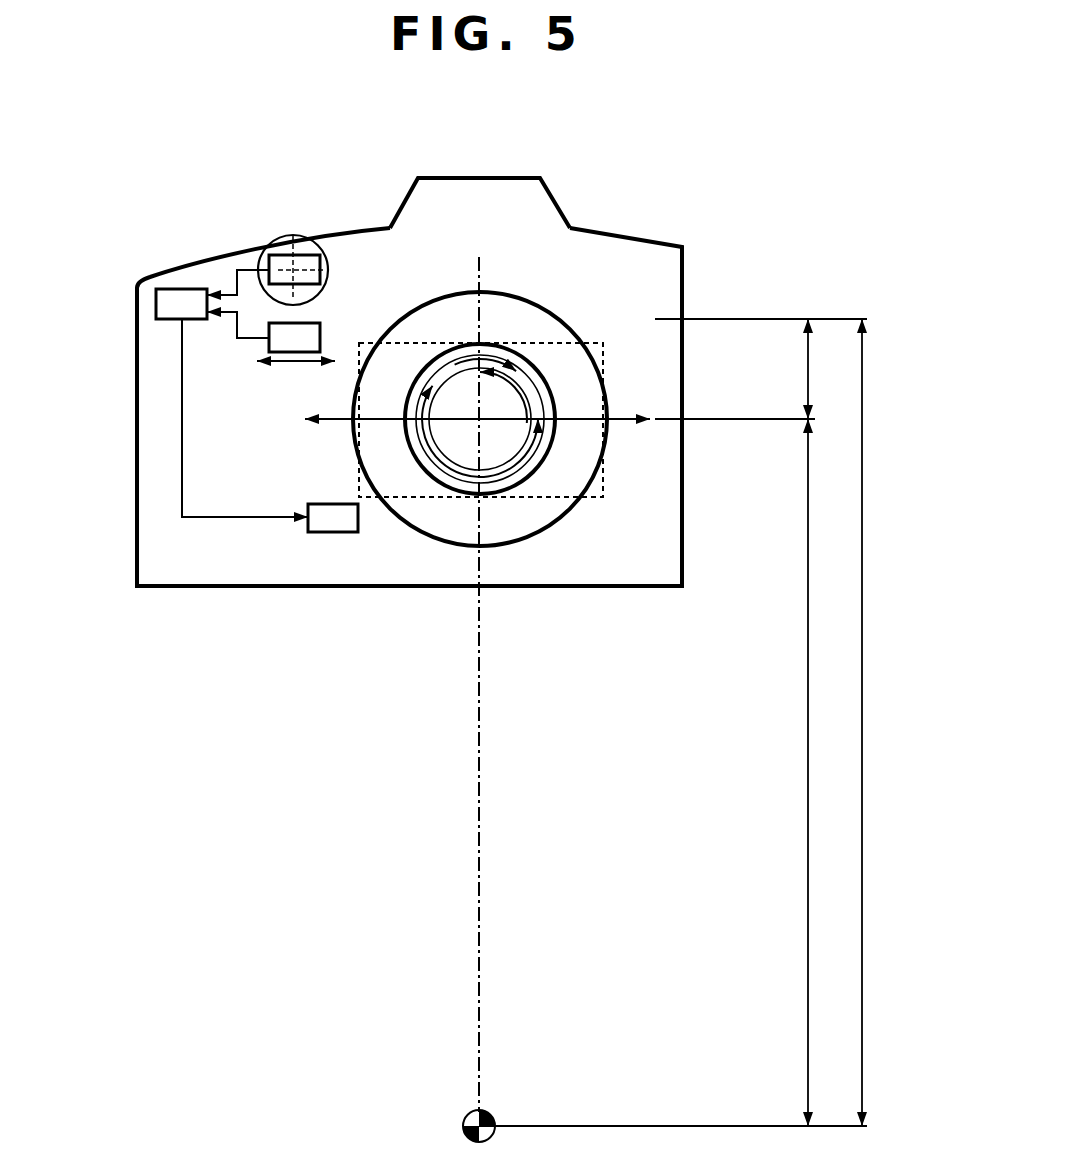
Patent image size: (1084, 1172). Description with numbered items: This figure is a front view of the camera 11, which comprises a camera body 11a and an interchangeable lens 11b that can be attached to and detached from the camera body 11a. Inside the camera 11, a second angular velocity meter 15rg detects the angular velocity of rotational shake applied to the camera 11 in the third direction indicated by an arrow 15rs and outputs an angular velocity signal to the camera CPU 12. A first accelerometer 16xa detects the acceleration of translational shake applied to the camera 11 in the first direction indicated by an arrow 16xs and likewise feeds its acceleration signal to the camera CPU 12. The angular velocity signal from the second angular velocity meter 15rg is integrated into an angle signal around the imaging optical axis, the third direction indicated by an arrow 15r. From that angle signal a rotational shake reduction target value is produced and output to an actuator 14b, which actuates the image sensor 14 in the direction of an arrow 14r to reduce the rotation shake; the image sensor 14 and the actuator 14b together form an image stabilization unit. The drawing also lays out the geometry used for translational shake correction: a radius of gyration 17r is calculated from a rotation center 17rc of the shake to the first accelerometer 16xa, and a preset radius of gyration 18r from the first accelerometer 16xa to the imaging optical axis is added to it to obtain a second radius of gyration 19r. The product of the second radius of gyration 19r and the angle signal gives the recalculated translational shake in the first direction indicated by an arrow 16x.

The camera 11 is at (173, 150).
The camera body 11a is at (512, 178).
The interchangeable lens 11b is at (553, 310).
The camera CPU 12 is at (156, 305).
The image sensor 14 is at (603, 492).
The actuator 14b is at (323, 532).
The arrow indicating actuation direction of image sensor 14r is at (525, 400).
The arrow indicating rotation around imaging optical axis 15r is at (443, 345).
The second angular velocity meter 15rg is at (268, 244).
The arrow indicating direction of rotational shake 15rs is at (289, 256).
The arrow indicating direction of translational shake 16x is at (385, 420).
The first accelerometer 16xa is at (310, 323).
The arrow indicating direction of translational shake 16xs is at (293, 365).
The radius of gyration 17r is at (862, 762).
The rotation center 17rc is at (490, 1118).
The preset radius of gyration 18r is at (808, 388).
The second radius of gyration 19r is at (808, 768).